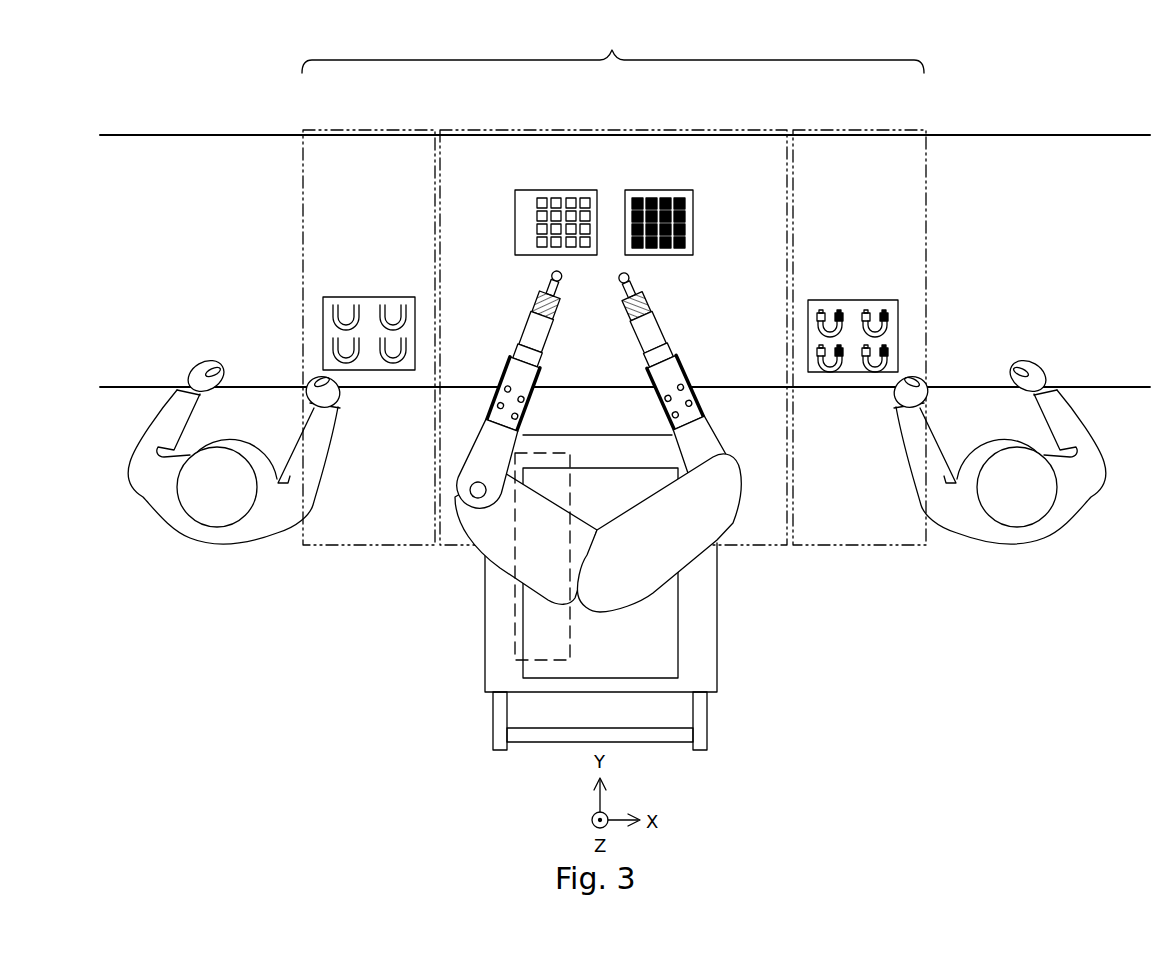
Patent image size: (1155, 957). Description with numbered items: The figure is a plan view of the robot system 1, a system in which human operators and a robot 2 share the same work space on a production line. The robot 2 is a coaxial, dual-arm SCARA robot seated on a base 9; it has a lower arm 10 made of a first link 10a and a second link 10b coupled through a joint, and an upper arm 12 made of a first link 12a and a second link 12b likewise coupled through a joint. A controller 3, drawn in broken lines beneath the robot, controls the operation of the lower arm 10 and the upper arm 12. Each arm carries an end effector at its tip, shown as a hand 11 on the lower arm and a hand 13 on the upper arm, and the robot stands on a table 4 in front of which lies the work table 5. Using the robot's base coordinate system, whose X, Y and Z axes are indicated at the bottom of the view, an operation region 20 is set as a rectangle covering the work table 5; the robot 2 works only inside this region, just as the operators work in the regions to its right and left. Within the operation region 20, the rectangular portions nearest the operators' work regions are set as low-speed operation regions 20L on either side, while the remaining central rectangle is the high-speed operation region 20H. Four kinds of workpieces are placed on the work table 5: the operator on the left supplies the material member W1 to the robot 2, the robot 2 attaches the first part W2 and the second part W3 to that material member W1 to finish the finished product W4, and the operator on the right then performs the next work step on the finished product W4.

The robot system 1 is at (565, 592).
The robot 2 is at (609, 462).
The controller 3 is at (515, 641).
The table 4 is at (717, 622).
The work table 5 is at (1016, 134).
The base 9 is at (680, 665).
The lower arm 10 is at (481, 433).
The first link 10a is at (462, 527).
The second link 10b is at (476, 435).
The first hand 11 is at (530, 322).
The upper arm 12 is at (715, 438).
The first link 12a is at (733, 510).
The second link 12b is at (714, 423).
The second hand 13 is at (652, 318).
The operation region 20 is at (614, 285).
The low-speed operation regions 20L is at (330, 128).
The high-speed operation region 20H is at (630, 128).
The workpiece (material member) W1 is at (374, 297).
The workpiece (first part) W2 is at (563, 190).
The workpiece (second part) W3 is at (660, 190).
The workpiece (finished product) W4 is at (858, 300).